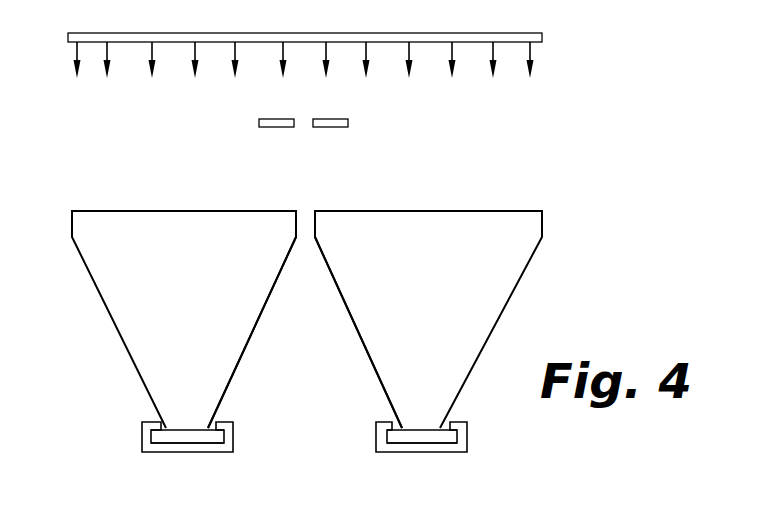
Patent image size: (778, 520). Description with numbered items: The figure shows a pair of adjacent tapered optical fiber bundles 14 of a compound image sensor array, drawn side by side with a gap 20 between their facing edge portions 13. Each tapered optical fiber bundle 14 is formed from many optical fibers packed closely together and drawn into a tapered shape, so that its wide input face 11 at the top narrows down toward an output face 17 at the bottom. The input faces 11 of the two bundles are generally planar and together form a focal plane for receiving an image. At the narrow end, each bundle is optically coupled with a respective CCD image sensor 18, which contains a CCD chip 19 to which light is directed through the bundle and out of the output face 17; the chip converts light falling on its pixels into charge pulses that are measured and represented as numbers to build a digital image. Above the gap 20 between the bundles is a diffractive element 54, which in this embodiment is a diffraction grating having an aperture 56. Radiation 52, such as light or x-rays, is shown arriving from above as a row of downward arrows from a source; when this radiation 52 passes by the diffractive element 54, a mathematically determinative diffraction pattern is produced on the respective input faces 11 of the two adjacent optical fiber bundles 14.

The radiation 52 is at (543, 63).
The diffractive element 54 is at (368, 128).
The aperture 56 is at (294, 120).
The input face 11 is at (98, 210).
The edge portion 13 is at (290, 210).
The gap 20 is at (313, 232).
The tapered optical fiber bundle 14 is at (393, 343).
The output face 17 is at (178, 430).
The CCD image sensor 18 is at (143, 429).
The CCD chip 19 is at (195, 437).